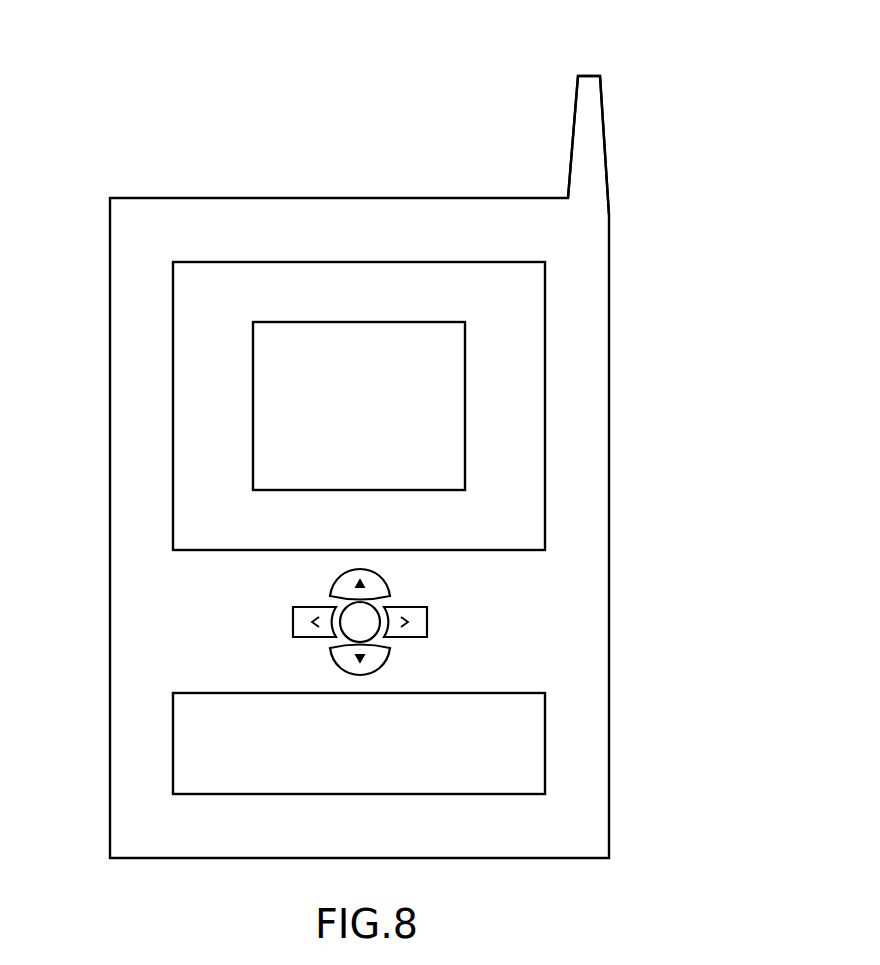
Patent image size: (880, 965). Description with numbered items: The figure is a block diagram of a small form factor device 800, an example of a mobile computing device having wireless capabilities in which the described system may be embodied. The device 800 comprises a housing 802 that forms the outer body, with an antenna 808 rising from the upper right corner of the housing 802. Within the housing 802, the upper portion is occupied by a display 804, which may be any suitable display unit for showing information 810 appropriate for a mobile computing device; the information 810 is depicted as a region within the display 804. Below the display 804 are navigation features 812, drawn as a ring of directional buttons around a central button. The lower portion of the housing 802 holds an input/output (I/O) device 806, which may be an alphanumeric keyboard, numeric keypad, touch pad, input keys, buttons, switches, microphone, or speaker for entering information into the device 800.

The small form factor device 800 is at (131, 92).
The housing 802 is at (609, 531).
The display 804 is at (545, 281).
The input/output (I/O) device 806 is at (545, 733).
The antenna 808 is at (571, 132).
The information 810 is at (465, 430).
The navigation features 812 is at (447, 607).